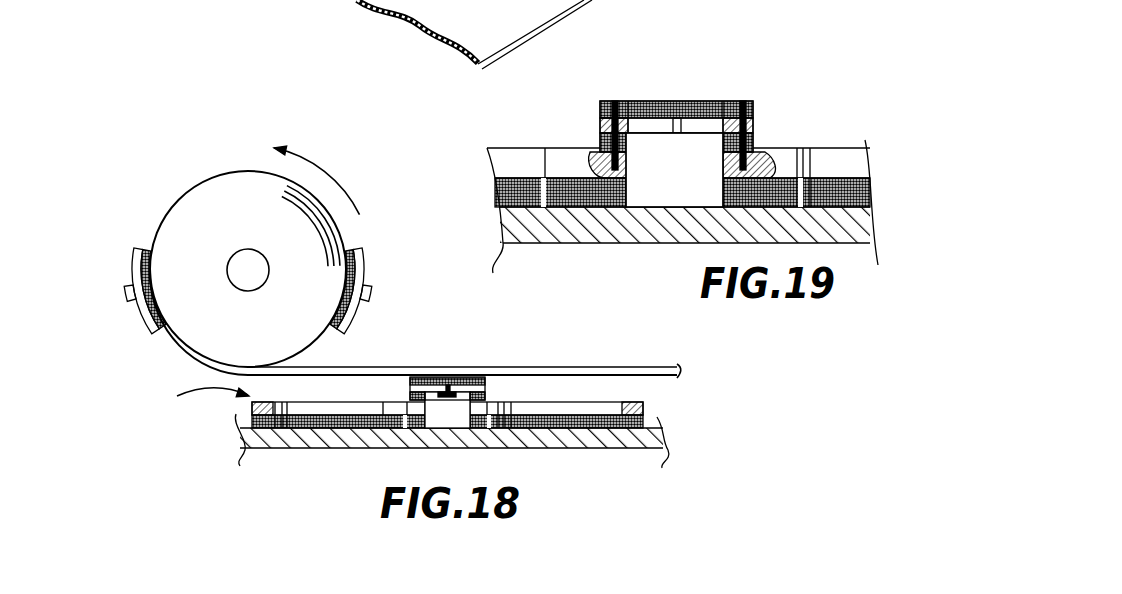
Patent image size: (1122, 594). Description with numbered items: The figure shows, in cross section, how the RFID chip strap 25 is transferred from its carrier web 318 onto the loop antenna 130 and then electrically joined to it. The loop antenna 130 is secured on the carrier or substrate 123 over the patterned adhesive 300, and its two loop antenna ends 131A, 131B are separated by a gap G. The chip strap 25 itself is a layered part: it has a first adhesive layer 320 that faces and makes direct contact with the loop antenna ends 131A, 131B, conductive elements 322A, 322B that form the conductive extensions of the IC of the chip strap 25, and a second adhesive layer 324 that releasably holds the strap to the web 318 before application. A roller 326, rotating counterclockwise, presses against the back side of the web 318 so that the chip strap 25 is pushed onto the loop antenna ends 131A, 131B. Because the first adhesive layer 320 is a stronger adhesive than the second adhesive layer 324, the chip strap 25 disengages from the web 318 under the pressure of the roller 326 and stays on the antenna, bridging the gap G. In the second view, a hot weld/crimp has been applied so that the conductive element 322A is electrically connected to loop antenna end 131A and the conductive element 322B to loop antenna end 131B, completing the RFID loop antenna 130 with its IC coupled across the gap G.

In FIG. 18, the roller 326 is at (227, 188).
In FIG. 18, the chip strap 25 is at (114, 266).
In FIG. 19, the chip strap 25 is at (681, 98).
In FIG. 18, the element IC is at (127, 293).
In FIG. 19, the element IC is at (674, 170).
In FIG. 18, the web 318 is at (596, 371).
In FIG. 18, the patterned adhesive 300 is at (590, 428).
In FIG. 18, the loop antenna 130 is at (394, 412).
In FIG. 18, the loop antenna end 131A is at (402, 410).
In FIG. 19, the loop antenna end 131A is at (593, 153).
In FIG. 18, the loop antenna end 131B is at (490, 410).
In FIG. 19, the loop antenna end 131B is at (763, 150).
In FIG. 18, the gap G is at (450, 415).
In FIG. 19, the gap G is at (665, 207).
In FIG. 18, the substrate 123 is at (290, 445).
In FIG. 18, the second adhesive layer 324 is at (466, 365).
In FIG. 19, the second adhesive layer 324 is at (697, 107).
In FIG. 18, the conductive element 322A is at (420, 378).
In FIG. 19, the conductive element 322A is at (645, 123).
In FIG. 18, the conductive element 322B is at (490, 385).
In FIG. 19, the conductive element 322B is at (712, 112).
In FIG. 18, the first adhesive layer 320 is at (410, 396).
In FIG. 19, the first adhesive layer 320 is at (600, 152).